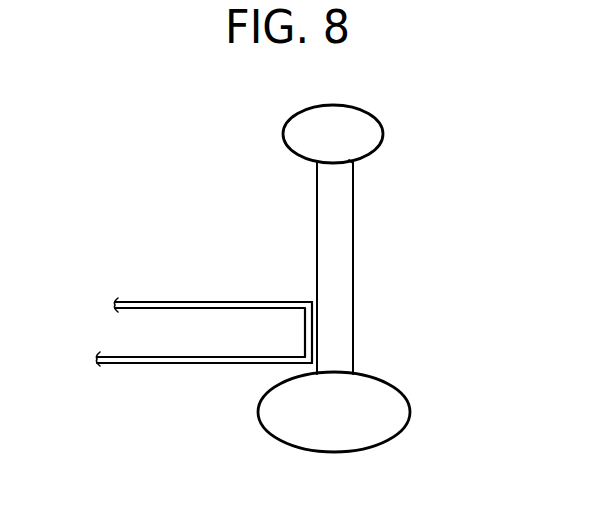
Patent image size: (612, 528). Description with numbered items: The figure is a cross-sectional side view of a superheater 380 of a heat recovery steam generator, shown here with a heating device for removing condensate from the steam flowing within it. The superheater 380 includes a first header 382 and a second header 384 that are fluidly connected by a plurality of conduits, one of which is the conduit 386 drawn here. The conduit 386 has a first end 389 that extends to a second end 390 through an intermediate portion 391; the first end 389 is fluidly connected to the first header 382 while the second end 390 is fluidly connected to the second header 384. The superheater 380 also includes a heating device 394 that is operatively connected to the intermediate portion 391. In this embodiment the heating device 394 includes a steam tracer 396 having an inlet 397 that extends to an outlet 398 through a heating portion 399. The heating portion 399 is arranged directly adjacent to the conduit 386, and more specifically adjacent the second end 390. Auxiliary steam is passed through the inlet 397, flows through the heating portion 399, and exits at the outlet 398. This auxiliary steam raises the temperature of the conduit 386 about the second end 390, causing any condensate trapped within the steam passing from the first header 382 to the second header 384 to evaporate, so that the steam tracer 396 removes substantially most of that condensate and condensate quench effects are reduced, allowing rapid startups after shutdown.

The superheater 380 is at (414, 210).
The first header 382 is at (378, 102).
The second header 384 is at (421, 406).
The conduit 386 is at (379, 270).
The first end 389 is at (353, 163).
The second end 390 is at (355, 372).
The intermediate portion 391 is at (317, 256).
The heating device 394 is at (136, 274).
The steam tracer 396 is at (140, 377).
The inlet 397 is at (178, 301).
The outlet 398 is at (113, 353).
The heating portion 399 is at (305, 332).